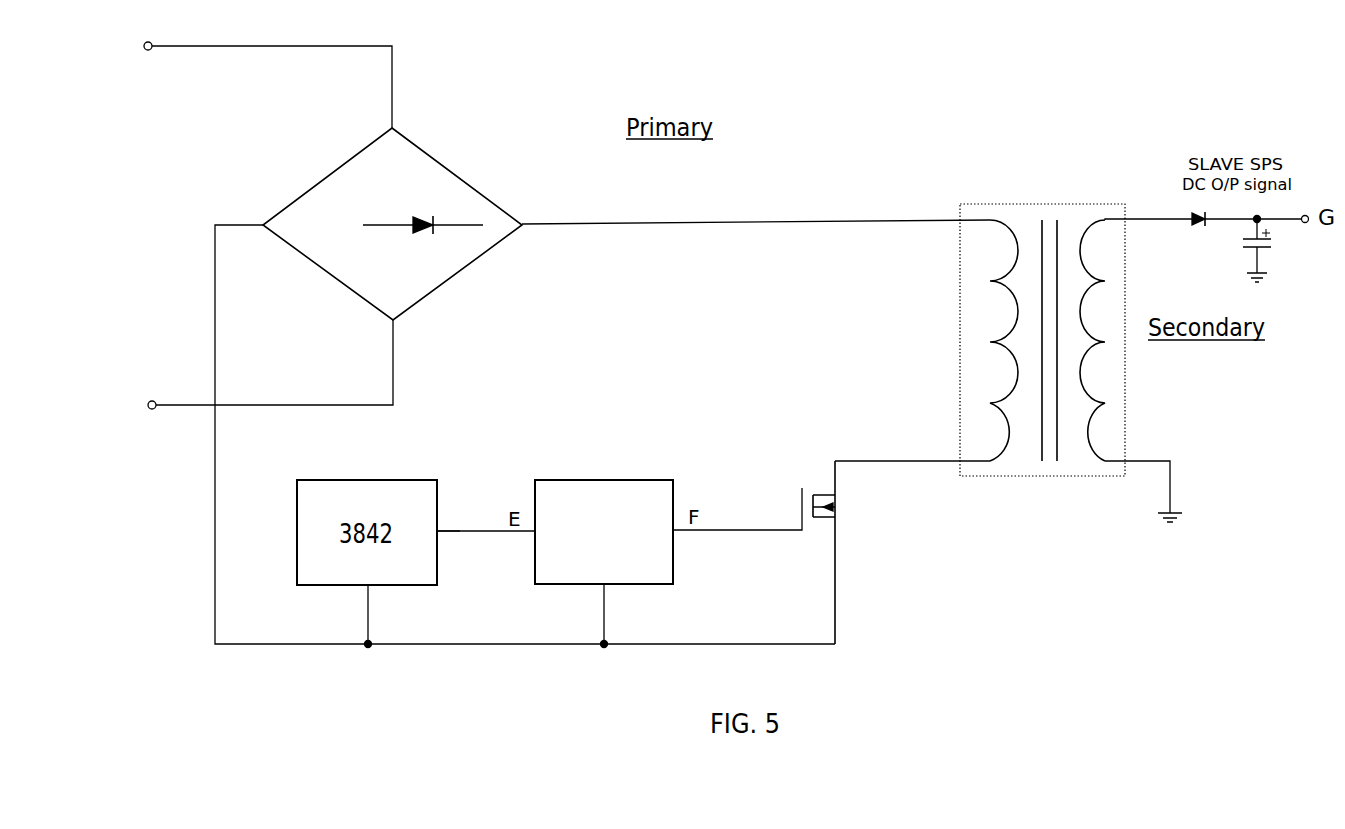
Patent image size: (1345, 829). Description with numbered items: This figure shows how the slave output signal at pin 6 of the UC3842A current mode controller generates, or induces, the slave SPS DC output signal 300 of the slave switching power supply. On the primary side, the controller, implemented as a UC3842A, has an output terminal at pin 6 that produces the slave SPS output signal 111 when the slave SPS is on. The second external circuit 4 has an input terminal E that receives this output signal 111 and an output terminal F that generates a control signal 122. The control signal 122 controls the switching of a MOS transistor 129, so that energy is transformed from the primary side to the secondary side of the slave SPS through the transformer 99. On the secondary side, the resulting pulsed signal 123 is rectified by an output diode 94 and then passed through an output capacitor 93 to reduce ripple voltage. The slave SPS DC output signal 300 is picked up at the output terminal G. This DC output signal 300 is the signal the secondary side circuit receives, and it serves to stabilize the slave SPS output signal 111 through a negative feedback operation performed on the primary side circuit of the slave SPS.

The second external circuit 4 is at (582, 479).
The pin 6 of UC3842A 6 is at (442, 536).
The transformer 99 is at (1036, 477).
The slave SPS output signal 111 is at (470, 532).
The control signal 122 is at (738, 532).
The pulsed signal 123 is at (1138, 216).
The MOS transistor 129 is at (842, 552).
The output diode 94 is at (1222, 232).
The output capacitor 93 is at (1244, 250).
The slave SPS DC output signal 300 is at (1262, 208).